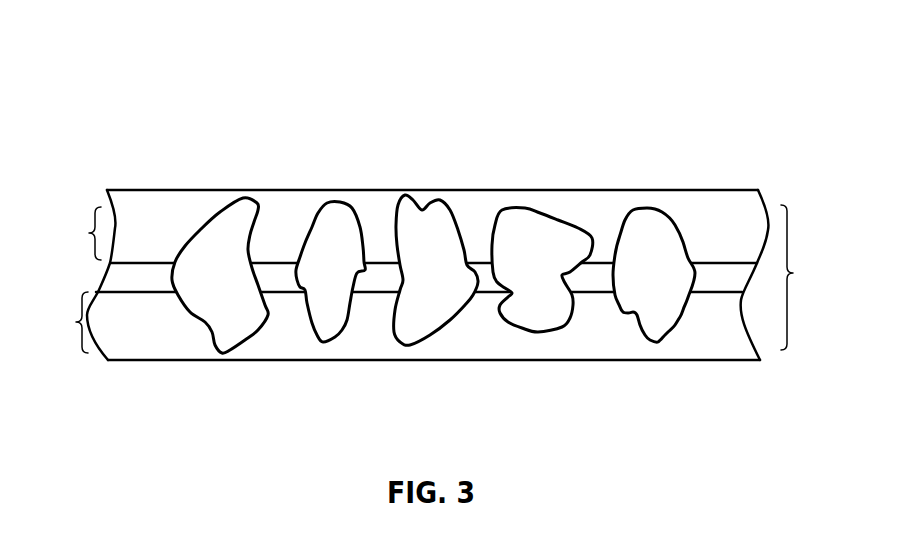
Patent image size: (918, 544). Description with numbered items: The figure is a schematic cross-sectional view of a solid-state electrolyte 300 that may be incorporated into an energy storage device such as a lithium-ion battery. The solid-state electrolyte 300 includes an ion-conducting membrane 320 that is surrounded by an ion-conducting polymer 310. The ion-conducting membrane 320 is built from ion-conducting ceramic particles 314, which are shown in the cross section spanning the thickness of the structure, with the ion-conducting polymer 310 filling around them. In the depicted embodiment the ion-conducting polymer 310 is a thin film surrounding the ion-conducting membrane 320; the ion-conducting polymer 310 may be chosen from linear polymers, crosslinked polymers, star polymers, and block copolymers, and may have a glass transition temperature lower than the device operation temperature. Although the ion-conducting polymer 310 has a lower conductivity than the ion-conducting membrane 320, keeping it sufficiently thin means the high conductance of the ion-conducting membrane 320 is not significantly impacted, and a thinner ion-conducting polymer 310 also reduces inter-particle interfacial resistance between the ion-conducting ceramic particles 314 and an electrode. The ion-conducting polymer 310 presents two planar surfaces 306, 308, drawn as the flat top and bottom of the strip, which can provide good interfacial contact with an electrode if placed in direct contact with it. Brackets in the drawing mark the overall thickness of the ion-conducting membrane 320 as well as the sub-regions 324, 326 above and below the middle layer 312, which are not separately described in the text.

The solid-state electrolyte 300 is at (106, 118).
The planar surface 306 is at (163, 190).
The planar surface 308 is at (150, 362).
The ion-conducting polymer 310 is at (723, 208).
The intermediate layer 312 is at (592, 272).
The ion-conducting ceramic particles 314 is at (337, 218).
The ion-conducting membrane 320 is at (811, 277).
The first layer thickness 324 is at (73, 233).
The second layer thickness 326 is at (59, 322).